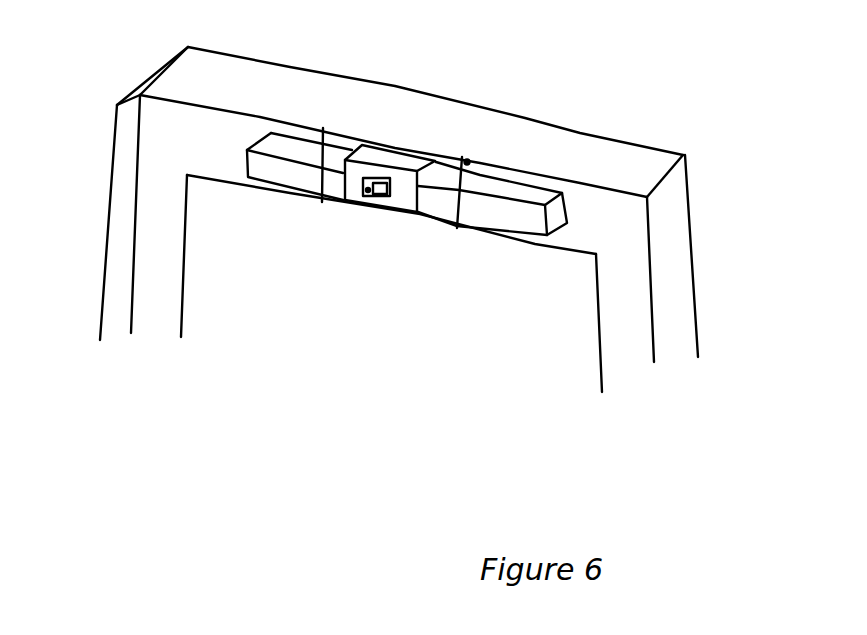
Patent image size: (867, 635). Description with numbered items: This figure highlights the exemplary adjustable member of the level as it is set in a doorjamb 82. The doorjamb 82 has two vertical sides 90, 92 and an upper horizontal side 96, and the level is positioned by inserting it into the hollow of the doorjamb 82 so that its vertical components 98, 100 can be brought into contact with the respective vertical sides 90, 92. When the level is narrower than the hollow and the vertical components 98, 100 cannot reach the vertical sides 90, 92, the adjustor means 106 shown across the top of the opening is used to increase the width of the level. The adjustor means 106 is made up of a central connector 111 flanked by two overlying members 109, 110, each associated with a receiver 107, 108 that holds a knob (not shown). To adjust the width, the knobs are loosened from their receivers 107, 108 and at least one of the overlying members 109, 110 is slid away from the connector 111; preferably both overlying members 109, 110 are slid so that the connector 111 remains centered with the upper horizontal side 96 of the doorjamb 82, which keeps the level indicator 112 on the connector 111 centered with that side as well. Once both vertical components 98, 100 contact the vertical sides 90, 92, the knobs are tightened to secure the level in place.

The doorjamb 82 is at (675, 193).
The vertical side 90 is at (122, 173).
The vertical side 92 is at (678, 267).
The upper horizontal side 96 is at (523, 127).
The vertical component 98 is at (150, 245).
The vertical component 100 is at (630, 313).
The adjustor means 106 is at (407, 236).
The receiver 107 is at (280, 145).
The receiver 108 is at (535, 198).
The overlying member 109 is at (228, 128).
The overlying member 110 is at (608, 200).
The connector 111 is at (403, 183).
The level indicator 112 is at (365, 197).